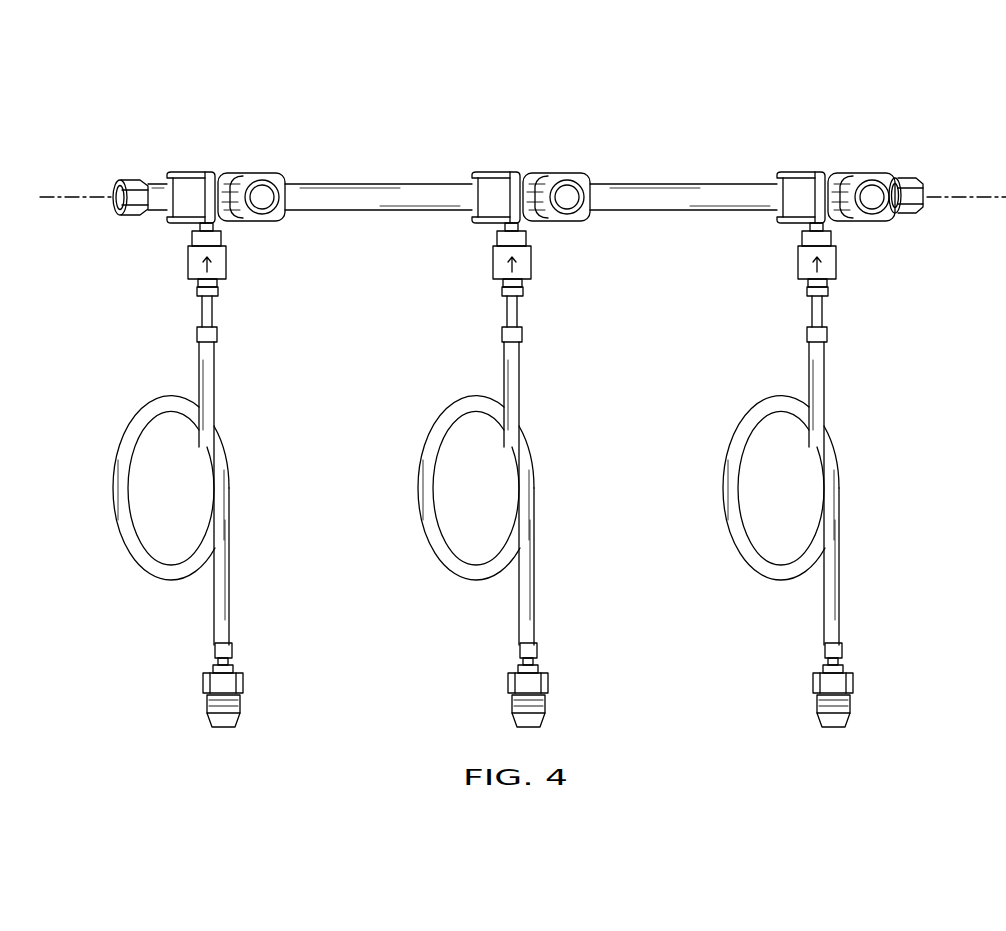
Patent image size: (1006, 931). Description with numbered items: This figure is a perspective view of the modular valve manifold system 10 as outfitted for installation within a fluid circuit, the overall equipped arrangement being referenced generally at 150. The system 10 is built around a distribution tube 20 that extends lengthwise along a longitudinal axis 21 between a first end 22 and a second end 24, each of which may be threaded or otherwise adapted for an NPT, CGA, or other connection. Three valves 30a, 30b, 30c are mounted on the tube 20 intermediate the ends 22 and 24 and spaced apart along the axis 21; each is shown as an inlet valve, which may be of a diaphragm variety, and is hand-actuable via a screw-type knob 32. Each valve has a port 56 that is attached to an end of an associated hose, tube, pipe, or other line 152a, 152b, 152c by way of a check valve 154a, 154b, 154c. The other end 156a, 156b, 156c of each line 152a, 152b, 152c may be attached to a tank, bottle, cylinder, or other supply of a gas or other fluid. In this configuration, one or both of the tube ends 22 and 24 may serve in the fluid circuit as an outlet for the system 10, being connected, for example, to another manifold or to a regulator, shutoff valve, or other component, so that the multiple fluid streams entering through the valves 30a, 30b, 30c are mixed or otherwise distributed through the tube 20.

The manifold assembly 150 is at (704, 109).
The modular valve manifold system 10 is at (735, 166).
The distribution tube 20 is at (648, 176).
The longitudinal axis 21 is at (965, 197).
The first end 22 is at (130, 178).
The second end 24 is at (908, 178).
The valve 30a is at (228, 162).
The valve 30b is at (504, 162).
The valve 30c is at (812, 162).
The screw-type knob 32 is at (260, 172).
The port 56 is at (216, 227).
The check valve 154a is at (221, 268).
The check valve 154b is at (558, 265).
The check valve 154c is at (863, 265).
The line 152a is at (227, 473).
The line 152b is at (521, 470).
The line 152c is at (826, 470).
The other end of line 156a is at (240, 702).
The other end of line 156b is at (571, 686).
The other end of line 156c is at (877, 685).